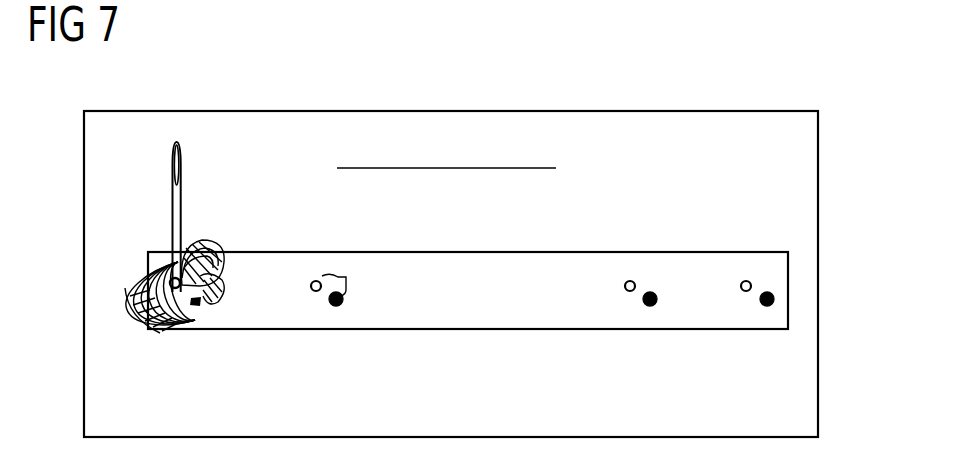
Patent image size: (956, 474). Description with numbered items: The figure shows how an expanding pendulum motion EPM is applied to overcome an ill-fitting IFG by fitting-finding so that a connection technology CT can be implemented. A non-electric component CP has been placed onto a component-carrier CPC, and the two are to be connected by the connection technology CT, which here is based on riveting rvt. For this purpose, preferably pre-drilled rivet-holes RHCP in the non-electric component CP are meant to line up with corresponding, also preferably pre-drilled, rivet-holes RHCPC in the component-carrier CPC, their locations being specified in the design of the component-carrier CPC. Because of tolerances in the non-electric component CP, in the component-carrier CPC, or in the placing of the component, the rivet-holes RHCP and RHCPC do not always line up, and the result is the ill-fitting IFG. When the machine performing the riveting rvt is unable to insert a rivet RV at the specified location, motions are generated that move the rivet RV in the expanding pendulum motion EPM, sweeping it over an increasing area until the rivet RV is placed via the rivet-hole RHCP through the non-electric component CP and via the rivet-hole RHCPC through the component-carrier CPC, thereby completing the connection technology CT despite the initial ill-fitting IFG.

The component-carrier CPC is at (450, 110).
The non-electric component CP is at (788, 289).
The rivet RV is at (172, 219).
The riveting rvt is at (188, 220).
The expanding pendulum motion EPM is at (210, 260).
The connection technology CT is at (118, 271).
The ill-fitting IFG is at (200, 280).
The rivet-hole in the non-electric component RHCP is at (130, 382).
The rivet-hole in the component-carrier RHCPC is at (186, 308).